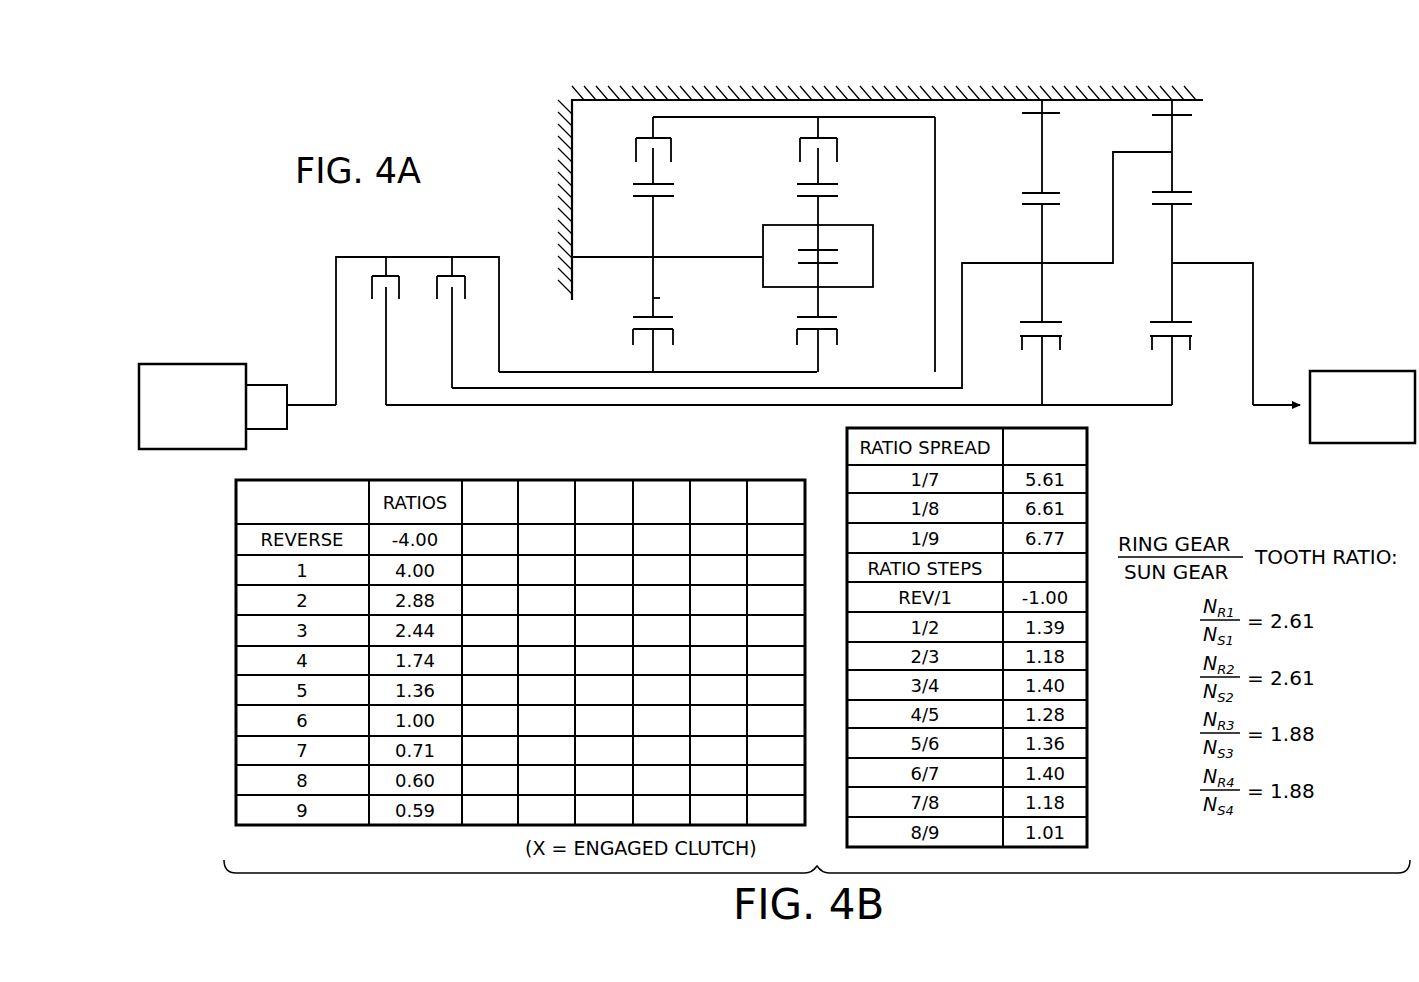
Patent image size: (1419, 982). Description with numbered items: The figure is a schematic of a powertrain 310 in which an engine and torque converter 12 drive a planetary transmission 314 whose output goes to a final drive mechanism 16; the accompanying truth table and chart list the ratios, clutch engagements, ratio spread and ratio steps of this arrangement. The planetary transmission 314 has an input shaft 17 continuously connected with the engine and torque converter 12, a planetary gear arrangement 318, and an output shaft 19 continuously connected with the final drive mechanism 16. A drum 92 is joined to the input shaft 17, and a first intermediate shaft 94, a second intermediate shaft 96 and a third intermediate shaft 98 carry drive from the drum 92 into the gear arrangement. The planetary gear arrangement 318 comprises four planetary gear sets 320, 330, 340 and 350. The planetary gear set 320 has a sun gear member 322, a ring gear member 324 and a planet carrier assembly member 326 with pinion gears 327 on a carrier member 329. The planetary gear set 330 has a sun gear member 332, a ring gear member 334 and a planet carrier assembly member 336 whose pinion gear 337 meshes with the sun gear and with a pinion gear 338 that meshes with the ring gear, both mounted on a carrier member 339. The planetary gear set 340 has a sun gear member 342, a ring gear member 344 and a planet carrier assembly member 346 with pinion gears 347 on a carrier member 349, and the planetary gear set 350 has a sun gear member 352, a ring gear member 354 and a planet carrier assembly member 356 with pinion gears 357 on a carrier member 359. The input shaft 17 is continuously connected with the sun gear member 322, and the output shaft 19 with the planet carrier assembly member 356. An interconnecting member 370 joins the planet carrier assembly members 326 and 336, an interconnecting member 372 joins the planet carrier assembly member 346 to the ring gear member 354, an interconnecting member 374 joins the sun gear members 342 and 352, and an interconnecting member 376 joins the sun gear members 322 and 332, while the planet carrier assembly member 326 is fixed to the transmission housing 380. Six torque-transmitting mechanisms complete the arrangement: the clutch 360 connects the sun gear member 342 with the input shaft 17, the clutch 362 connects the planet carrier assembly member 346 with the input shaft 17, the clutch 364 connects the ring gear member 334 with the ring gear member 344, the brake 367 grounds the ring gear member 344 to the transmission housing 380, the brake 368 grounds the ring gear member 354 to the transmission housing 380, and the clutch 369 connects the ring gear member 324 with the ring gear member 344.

In FIG. 4A, the engine and torque converter 12 is at (212, 345).
In FIG. 4A, the final drive mechanism 16 is at (1347, 355).
In FIG. 4A, the input shaft 17 is at (316, 408).
In FIG. 4A, the output shaft 19 is at (1265, 408).
In FIG. 4A, the drum 92 is at (357, 257).
In FIG. 4A, the first intermediate shaft 94 is at (540, 372).
In FIG. 4A, the second intermediate shaft 96 is at (588, 388).
In FIG. 4A, the third intermediate shaft 98 is at (638, 405).
In FIG. 4A, the powertrain 310 is at (513, 128).
In FIG. 4A, the planetary transmission 314 is at (566, 85).
In FIG. 4A, the planetary gear arrangement 318 is at (655, 85).
In FIG. 4A, the planetary gear set 320 is at (665, 337).
In FIG. 4A, the sun gear member 322 is at (640, 333).
In FIG. 4A, the ring gear member 324 is at (636, 184).
In FIG. 4A, the planet carrier assembly member 326 is at (612, 295).
In FIG. 4A, the pinion gears 327 is at (655, 298).
In FIG. 4A, the carrier member 329 is at (637, 257).
In FIG. 4A, the planetary gear set 330 is at (805, 335).
In FIG. 4A, the sun gear member 332 is at (832, 333).
In FIG. 4A, the ring gear member 334 is at (834, 184).
In FIG. 4A, the planet carrier assembly member 336 is at (853, 303).
In FIG. 4A, the pinion gear 337 is at (828, 300).
In FIG. 4A, the pinion gear 338 is at (826, 238).
In FIG. 4A, the carrier member 339 is at (737, 255).
In FIG. 4A, the planetary gear set 340 is at (1055, 345).
In FIG. 4A, the sun gear member 342 is at (1028, 340).
In FIG. 4A, the ring gear member 344 is at (1050, 193).
In FIG. 4A, the planet carrier assembly member 346 is at (1003, 283).
In FIG. 4A, the pinion gears 347 is at (1042, 252).
In FIG. 4A, the carrier member 349 is at (1005, 262).
In FIG. 4A, the planetary gear set 350 is at (1187, 345).
In FIG. 4A, the sun gear member 352 is at (1160, 340).
In FIG. 4A, the ring gear member 354 is at (1185, 192).
In FIG. 4A, the planet carrier assembly member 356 is at (1213, 283).
In FIG. 4A, the pinion gears 357 is at (1175, 255).
In FIG. 4A, the carrier member 359 is at (1237, 262).
In FIG. 4A, the clutch 360 is at (377, 308).
In FIG. 4B, the clutch 360 is at (490, 611).
In FIG. 4A, the clutch 362 is at (441, 308).
In FIG. 4B, the clutch 362 is at (546, 656).
In FIG. 4A, the clutch 364 is at (845, 140).
In FIG. 4B, the clutch 364 is at (604, 626).
In FIG. 4A, the brake 367 is at (1013, 106).
In FIG. 4B, the brake 367 is at (661, 641).
In FIG. 4A, the brake 368 is at (1202, 107).
In FIG. 4B, the brake 368 is at (718, 551).
In FIG. 4A, the clutch 369 is at (684, 140).
In FIG. 4B, the clutch 369 is at (776, 656).
In FIG. 4A, the interconnecting member 370 is at (678, 257).
In FIG. 4A, the interconnecting member 372 is at (1135, 152).
In FIG. 4A, the interconnecting member 374 is at (1142, 405).
In FIG. 4A, the interconnecting member 376 is at (780, 372).
In FIG. 4A, the transmission housing 380 is at (558, 228).